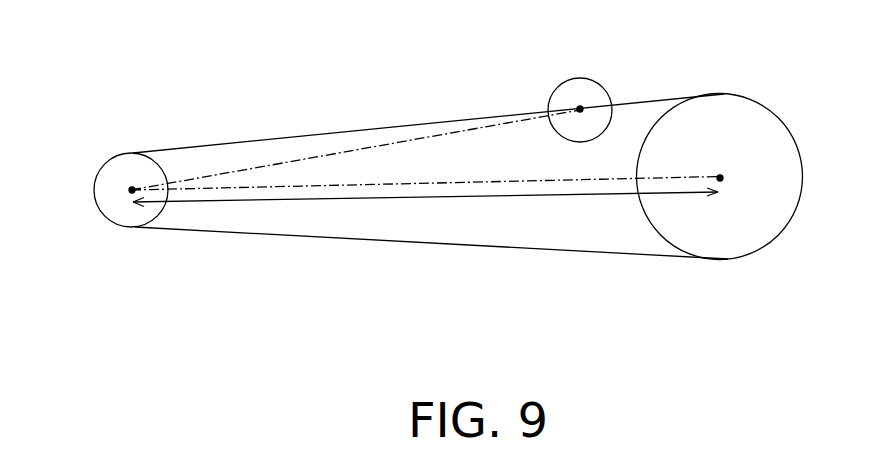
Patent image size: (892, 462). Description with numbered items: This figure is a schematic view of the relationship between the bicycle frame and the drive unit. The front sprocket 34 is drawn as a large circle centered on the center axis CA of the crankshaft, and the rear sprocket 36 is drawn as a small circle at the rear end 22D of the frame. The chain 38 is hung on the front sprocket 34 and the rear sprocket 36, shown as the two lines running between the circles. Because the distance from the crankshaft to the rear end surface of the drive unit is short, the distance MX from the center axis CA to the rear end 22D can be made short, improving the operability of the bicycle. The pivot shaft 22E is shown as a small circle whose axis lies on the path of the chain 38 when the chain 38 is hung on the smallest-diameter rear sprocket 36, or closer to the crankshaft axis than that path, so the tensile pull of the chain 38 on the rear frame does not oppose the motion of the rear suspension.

The rear end 22D is at (129, 190).
The pivot shaft 22E is at (581, 106).
The front sprocket 34 is at (758, 103).
The rear sprocket 36 is at (129, 153).
The chain 38 is at (477, 247).
The distance MX is at (553, 196).
The center axis CA is at (723, 179).